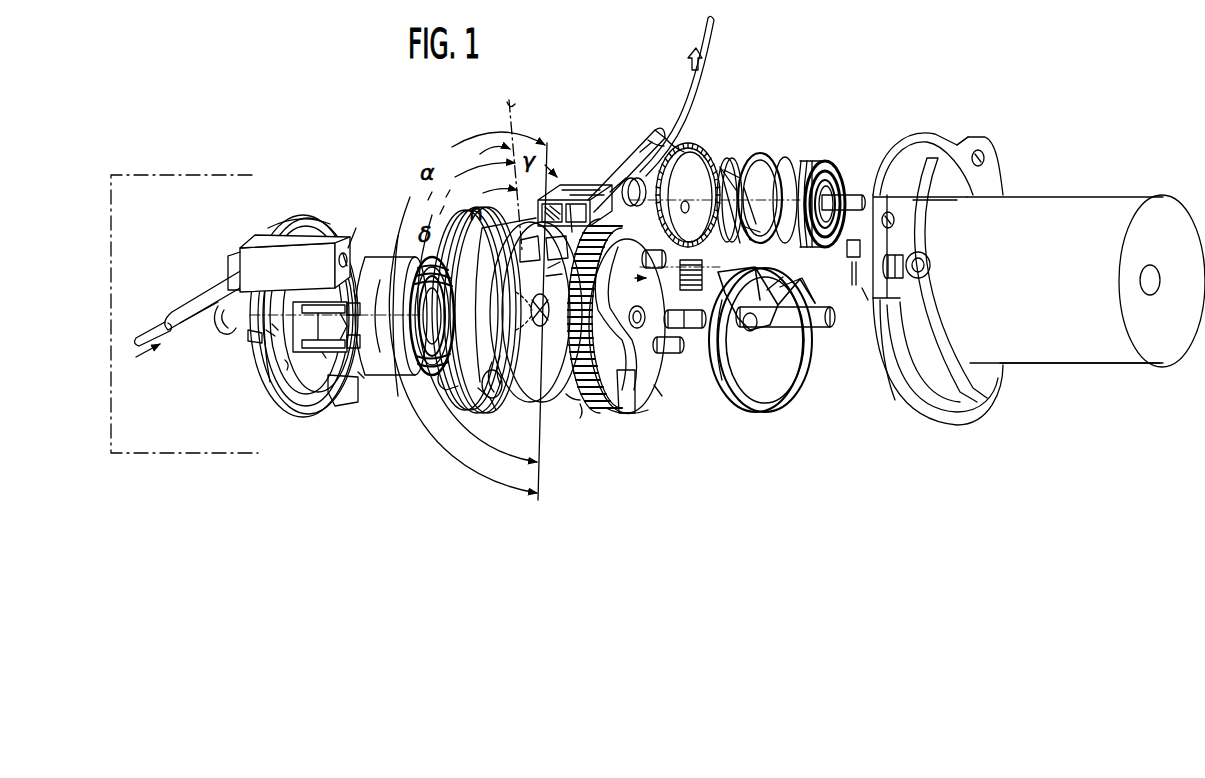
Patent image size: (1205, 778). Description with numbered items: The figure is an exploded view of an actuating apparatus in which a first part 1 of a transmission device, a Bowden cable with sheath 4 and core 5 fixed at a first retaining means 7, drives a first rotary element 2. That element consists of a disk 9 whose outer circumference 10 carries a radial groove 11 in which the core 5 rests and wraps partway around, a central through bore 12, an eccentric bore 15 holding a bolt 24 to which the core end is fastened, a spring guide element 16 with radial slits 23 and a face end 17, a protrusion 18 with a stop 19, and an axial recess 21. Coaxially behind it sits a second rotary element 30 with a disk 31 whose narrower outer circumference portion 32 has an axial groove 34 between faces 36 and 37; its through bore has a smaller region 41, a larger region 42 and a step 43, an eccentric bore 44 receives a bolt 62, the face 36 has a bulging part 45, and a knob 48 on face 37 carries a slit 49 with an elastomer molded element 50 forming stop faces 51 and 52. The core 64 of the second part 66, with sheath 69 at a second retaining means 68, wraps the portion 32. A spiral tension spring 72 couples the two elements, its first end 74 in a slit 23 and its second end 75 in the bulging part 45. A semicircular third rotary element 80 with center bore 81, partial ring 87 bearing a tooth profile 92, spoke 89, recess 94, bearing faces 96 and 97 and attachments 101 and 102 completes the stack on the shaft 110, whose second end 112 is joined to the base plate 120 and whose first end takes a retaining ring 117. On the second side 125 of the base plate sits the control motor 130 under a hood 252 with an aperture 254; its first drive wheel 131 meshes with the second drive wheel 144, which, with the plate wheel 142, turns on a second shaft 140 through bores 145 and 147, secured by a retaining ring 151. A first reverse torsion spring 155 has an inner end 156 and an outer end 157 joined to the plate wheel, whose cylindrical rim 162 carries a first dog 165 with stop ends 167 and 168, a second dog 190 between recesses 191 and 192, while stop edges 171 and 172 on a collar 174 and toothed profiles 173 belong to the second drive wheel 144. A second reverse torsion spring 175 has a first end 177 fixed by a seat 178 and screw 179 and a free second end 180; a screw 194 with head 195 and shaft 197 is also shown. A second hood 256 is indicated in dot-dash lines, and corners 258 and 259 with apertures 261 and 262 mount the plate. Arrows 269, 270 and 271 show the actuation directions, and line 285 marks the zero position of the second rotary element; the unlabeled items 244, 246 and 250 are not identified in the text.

The first part of the transmission device 1 is at (176, 297).
The first rotary element 2 is at (297, 420).
The Bowden cable sheath 4 is at (215, 282).
The Bowden cable core 5 is at (154, 316).
The first retaining means 7 is at (289, 263).
The disk 9 is at (293, 230).
The outer circumference 10 is at (266, 400).
The radial groove 11 is at (285, 412).
The central through bore 12 is at (361, 305).
The eccentric bore 15 is at (264, 358).
The spring guide element 16 is at (322, 354).
The face end 17 is at (361, 340).
The protrusion 18 is at (336, 403).
The stop 19 is at (362, 375).
The axial recess 21 is at (284, 366).
The radial slits 23 is at (318, 327).
The bolt 24 is at (250, 342).
The second rotary element 30 is at (548, 402).
The disk 31 is at (478, 405).
The outer circumference portion 32 is at (470, 392).
The axial groove 34 is at (470, 380).
The face 36 is at (448, 300).
The face 37 is at (512, 232).
The axial region 41 is at (544, 322).
The axial region 42 is at (517, 295).
The step 43 is at (518, 338).
The eccentric bore 44 is at (506, 396).
The bulging part 45 is at (496, 412).
The knob 48 is at (575, 205).
The slit 49 is at (574, 200).
The elastomer molded element 50 is at (559, 262).
The stop face 51 is at (528, 262).
The stop face 52 is at (576, 210).
The bolt 62 is at (506, 372).
The Bowden cable core 64 is at (716, 30).
The second part of the transmission device 66 is at (632, 148).
The second retaining means 68 is at (612, 160).
The Bowden cable sheath 69 is at (646, 146).
The tension spring 72 is at (384, 254).
The first folded-over end 74 is at (446, 268).
The second folded-over end 75 is at (404, 410).
The third rotary element 80 is at (652, 412).
The center bore 81 is at (626, 346).
The partial ring 87 is at (618, 416).
The spoke 89 is at (662, 396).
The tooth profile 92 is at (568, 404).
The recess 94 is at (580, 412).
The bearing face 96 is at (630, 414).
The bearing face 97 is at (640, 264).
The boltlike attachment 101 is at (670, 355).
The boltlike attachment 102 is at (654, 270).
The shaft 110 is at (772, 328).
The second end 112 is at (828, 328).
The retaining ring 117 is at (216, 335).
The base plate 120 is at (966, 420).
The second side 125 is at (988, 386).
The control motor 130 is at (1086, 281).
The first drive wheel 131 is at (720, 246).
The second shaft 140 is at (842, 178).
The plate wheel 142 is at (753, 244).
The second drive wheel 144 is at (692, 140).
The central bore 145 is at (758, 206).
The bore 147 is at (736, 205).
The retaining ring 151 is at (642, 184).
The first reverse torsion spring 155 is at (803, 158).
The first end 156 is at (864, 194).
The second end 157 is at (814, 160).
The cylindrical rim 162 is at (768, 150).
The first dog 165 is at (730, 152).
The first stop end 167 is at (746, 152).
The second stop end 168 is at (723, 155).
The first stop edge 171 is at (690, 197).
The second stop edge 172 is at (690, 212).
The toothed profile 173 is at (662, 136).
The collar 174 is at (676, 130).
The second reverse torsion spring 175 is at (762, 412).
The first spring end 177 is at (728, 368).
The seat 178 is at (750, 331).
The screw 179 is at (690, 330).
The second spring end 180 is at (766, 298).
The second dog 190 is at (799, 278).
The recess 191 is at (792, 162).
The recess 192 is at (775, 269).
The screw 194 is at (852, 282).
The head 195 is at (847, 252).
The shaft 197 is at (861, 304).
The frame rim 244 is at (893, 407).
The bearing boss 246 is at (931, 265).
The screw 250 is at (350, 240).
The hood 252 is at (1103, 362).
The aperture 254 is at (1158, 288).
The second hood 256 is at (172, 455).
The corner 258 is at (913, 203).
The corner 259 is at (980, 148).
The aperture 261 is at (895, 222).
The aperture 262 is at (990, 156).
The arrow 269 is at (150, 355).
The arrow 270 is at (690, 62).
The arrow 271 is at (559, 286).
The dot-dash line 285 is at (518, 104).